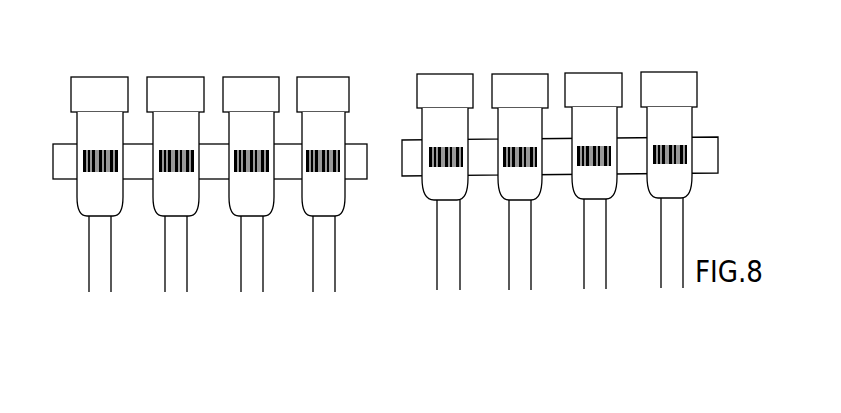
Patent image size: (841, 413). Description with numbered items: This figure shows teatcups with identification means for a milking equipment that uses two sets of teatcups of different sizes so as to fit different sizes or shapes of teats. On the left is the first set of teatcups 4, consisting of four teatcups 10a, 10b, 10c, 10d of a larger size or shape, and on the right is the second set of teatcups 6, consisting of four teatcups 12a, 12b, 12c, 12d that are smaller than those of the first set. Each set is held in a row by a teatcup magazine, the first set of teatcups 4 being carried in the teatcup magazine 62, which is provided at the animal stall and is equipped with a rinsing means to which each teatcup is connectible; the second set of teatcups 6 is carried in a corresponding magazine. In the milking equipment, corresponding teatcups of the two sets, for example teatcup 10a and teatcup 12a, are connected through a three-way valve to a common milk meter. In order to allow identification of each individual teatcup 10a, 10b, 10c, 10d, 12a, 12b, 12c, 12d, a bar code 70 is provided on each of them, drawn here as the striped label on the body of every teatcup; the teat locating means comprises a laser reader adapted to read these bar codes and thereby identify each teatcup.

The first set of teatcups 4 is at (166, 42).
The second set of teatcups 6 is at (653, 28).
The teatcup 10a is at (84, 168).
The teatcup 10b is at (167, 93).
The teatcup 10c is at (238, 92).
The teatcup 10d is at (317, 92).
The teatcup 12a is at (430, 92).
The teatcup 12b is at (507, 92).
The teatcup 12c is at (575, 90).
The teatcup 12d is at (660, 90).
The teatcup magazine 62 is at (73, 170).
The bar code label 70 is at (83, 157).